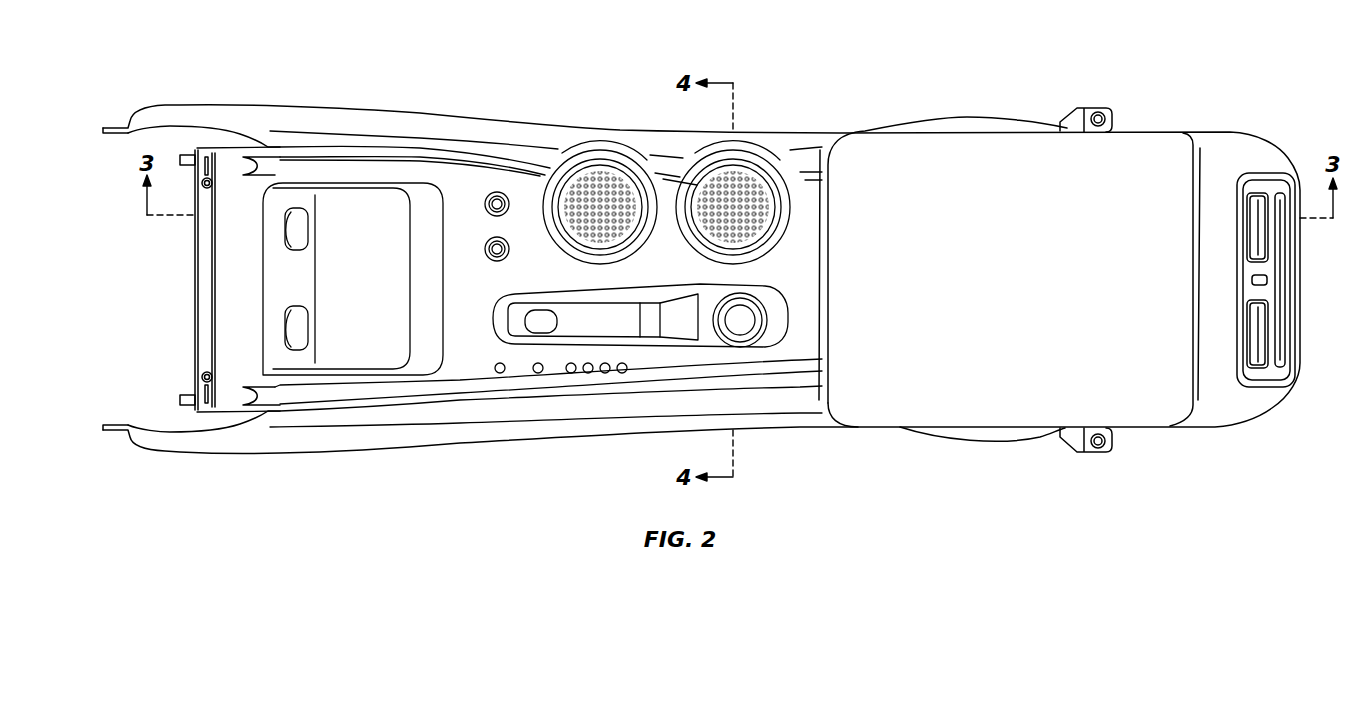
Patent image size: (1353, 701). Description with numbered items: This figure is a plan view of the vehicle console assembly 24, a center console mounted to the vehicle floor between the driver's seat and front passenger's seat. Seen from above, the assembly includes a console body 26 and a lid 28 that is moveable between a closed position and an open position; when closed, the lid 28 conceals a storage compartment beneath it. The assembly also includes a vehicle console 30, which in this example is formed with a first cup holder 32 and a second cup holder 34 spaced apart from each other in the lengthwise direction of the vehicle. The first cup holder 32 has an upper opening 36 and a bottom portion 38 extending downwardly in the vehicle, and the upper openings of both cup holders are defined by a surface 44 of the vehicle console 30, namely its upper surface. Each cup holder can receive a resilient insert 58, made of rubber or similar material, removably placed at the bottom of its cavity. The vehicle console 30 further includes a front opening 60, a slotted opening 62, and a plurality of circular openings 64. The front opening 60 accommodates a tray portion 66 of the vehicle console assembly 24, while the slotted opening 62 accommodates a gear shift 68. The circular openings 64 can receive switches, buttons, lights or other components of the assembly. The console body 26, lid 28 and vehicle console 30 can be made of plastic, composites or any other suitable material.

The vehicle console assembly 24 is at (884, 59).
The console body 26 is at (510, 118).
The lid 28 is at (948, 172).
The vehicle console 30 is at (423, 150).
The first cup holder 32 is at (605, 150).
The second cup holder 34 is at (753, 150).
The upper opening 36 is at (594, 195).
The bottom portion 38 is at (717, 192).
The surface 44 is at (497, 180).
The insert 58 is at (617, 237).
The front opening 60 is at (358, 197).
The slotted opening 62 is at (692, 330).
The circular openings 64 is at (482, 249).
The tray portion 66 is at (378, 347).
The gear shift 68 is at (747, 337).